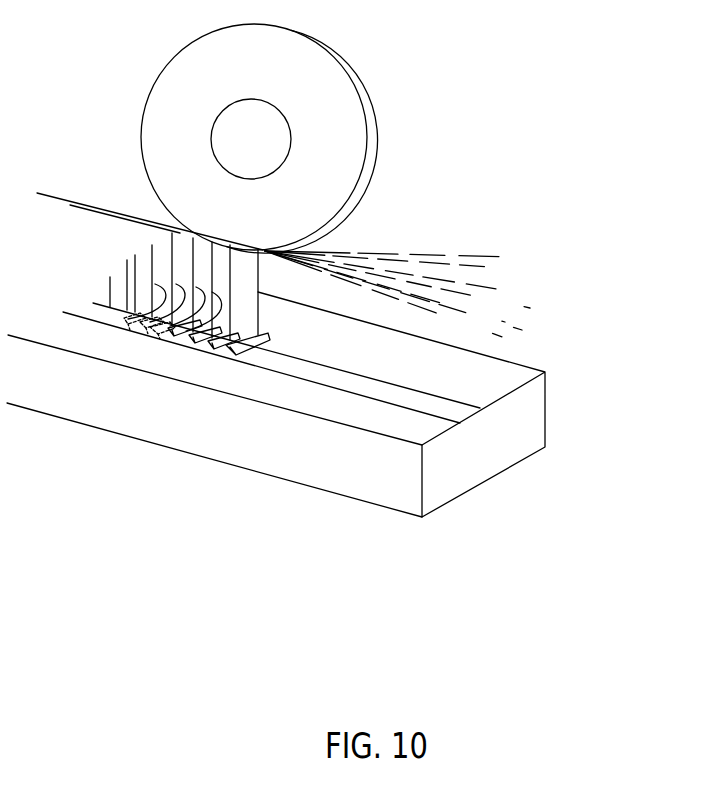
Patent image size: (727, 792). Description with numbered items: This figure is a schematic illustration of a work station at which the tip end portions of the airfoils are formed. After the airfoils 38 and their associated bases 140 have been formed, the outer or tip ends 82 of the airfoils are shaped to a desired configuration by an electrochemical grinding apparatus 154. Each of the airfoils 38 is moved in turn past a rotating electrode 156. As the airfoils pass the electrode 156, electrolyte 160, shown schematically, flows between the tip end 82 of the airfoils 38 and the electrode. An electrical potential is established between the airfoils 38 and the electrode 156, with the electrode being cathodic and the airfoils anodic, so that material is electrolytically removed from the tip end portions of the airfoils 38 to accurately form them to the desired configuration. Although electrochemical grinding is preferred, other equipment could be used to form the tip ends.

The electrochemical grinding apparatus 154 is at (392, 26).
The rotating electrode 156 is at (360, 133).
The electrolyte 160 is at (437, 254).
The tip end 82 is at (238, 247).
The airfoil 38 is at (142, 304).
The base 140 is at (182, 347).